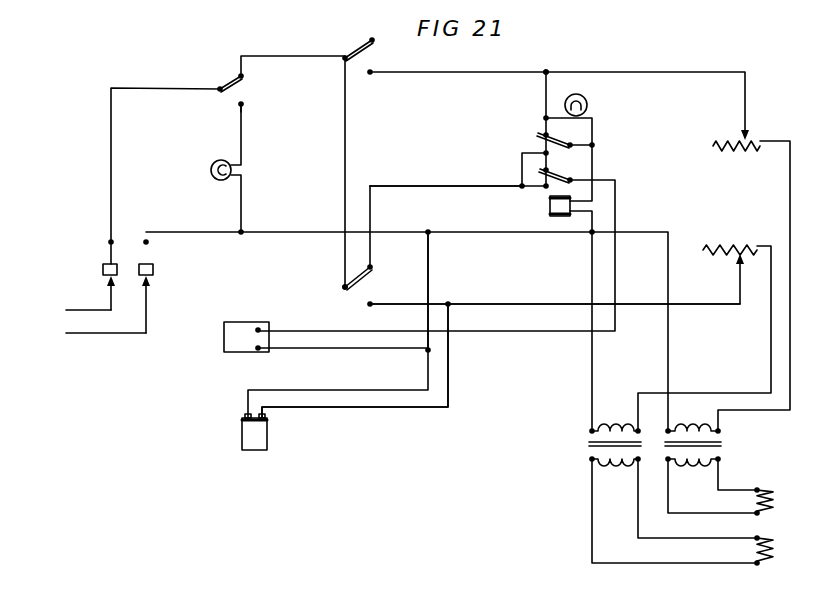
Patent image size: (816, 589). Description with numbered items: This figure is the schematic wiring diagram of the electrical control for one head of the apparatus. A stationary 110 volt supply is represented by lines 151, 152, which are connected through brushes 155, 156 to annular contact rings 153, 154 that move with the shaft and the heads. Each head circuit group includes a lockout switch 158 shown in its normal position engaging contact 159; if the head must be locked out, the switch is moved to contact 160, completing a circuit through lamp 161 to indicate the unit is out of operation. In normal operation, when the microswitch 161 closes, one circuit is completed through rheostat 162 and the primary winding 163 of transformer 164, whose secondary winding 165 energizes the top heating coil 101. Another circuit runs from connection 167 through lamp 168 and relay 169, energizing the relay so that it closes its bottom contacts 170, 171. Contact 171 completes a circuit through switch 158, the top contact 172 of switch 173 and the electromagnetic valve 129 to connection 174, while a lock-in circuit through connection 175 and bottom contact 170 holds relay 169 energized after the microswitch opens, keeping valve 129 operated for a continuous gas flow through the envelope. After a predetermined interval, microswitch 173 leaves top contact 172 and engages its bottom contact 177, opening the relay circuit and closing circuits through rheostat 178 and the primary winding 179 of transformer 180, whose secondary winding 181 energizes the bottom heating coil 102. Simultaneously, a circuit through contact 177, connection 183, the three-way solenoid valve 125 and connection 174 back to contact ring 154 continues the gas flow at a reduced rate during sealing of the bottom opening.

The top heating coil 101 is at (767, 492).
The bottom heating coil 102 is at (768, 541).
The 110 volt supply 110 is at (90, 326).
The three-way solenoid valve 125 is at (259, 436).
The electromagnetic valve 129 is at (232, 328).
The supply line 151 is at (106, 303).
The supply line 152 is at (110, 334).
The contact ring 153 is at (103, 268).
The contact ring 154 is at (154, 268).
The brush 155 is at (106, 283).
The brush 156 is at (152, 284).
The lockout switch 158 is at (236, 84).
The contact 159 is at (246, 73).
The contact 160 is at (246, 102).
The lamp 161 is at (209, 164).
The rheostat 162 is at (731, 138).
The primary winding 163 is at (687, 427).
The transformer 164 is at (718, 442).
The secondary winding 165 is at (690, 467).
The connection 167 is at (547, 68).
The lamp 168 is at (590, 96).
The relay 169 is at (550, 206).
The bottom contact 170 is at (562, 135).
The bottom contact 171 is at (561, 169).
The top contact 172 is at (373, 267).
The microswitch 173 is at (360, 282).
The connection 174 is at (432, 223).
The connection 175 is at (520, 186).
The bottom contact 177 is at (371, 306).
The rheostat 178 is at (753, 248).
The primary winding 179 is at (612, 421).
The transformer 180 is at (586, 444).
The secondary winding 181 is at (612, 467).
The connection 183 is at (449, 302).